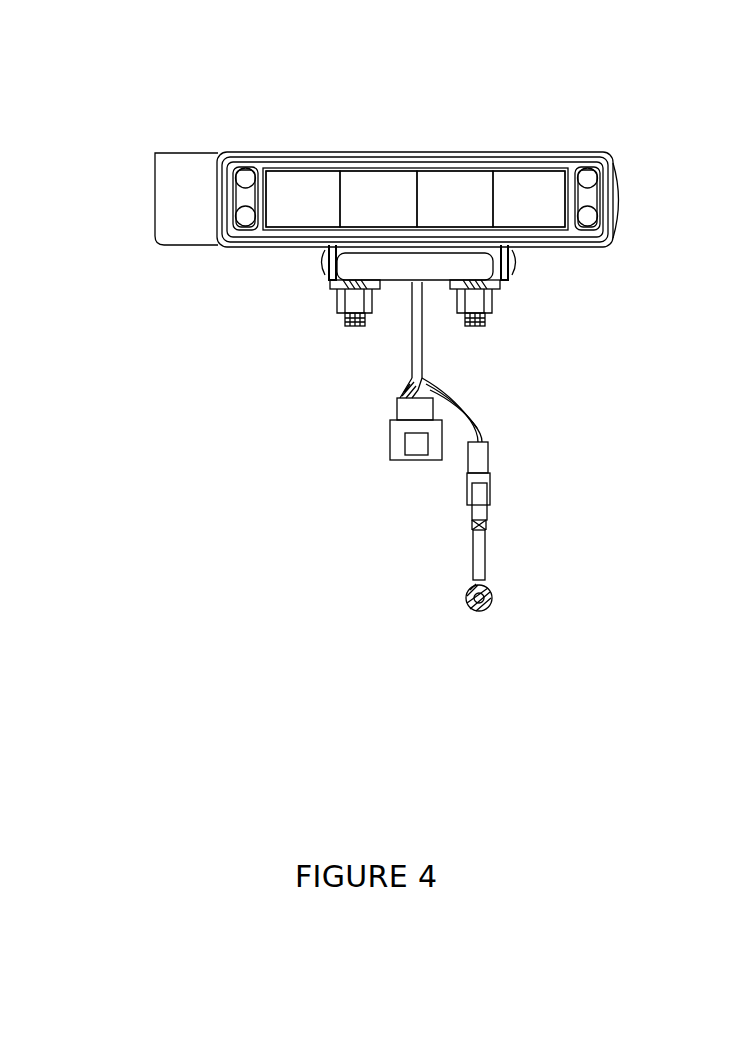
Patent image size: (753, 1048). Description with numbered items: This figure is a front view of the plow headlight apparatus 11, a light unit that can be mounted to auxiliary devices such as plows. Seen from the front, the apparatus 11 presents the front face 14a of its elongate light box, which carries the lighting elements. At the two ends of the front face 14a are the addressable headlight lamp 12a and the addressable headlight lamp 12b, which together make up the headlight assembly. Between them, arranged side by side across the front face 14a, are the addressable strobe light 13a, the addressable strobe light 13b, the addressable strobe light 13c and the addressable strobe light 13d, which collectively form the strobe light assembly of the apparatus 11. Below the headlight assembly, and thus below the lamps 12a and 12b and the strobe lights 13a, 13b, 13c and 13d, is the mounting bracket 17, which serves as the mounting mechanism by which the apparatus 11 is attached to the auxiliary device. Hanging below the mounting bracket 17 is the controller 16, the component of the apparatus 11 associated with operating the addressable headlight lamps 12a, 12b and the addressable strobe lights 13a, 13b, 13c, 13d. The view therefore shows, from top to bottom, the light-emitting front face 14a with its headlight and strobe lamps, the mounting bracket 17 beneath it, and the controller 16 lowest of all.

The plow headlight apparatus 11 is at (177, 133).
The addressable headlight lamp 12a is at (243, 218).
The addressable headlight lamp 12b is at (585, 180).
The addressable strobe light 13a is at (305, 192).
The addressable strobe light 13b is at (377, 192).
The addressable strobe light 13c is at (447, 192).
The addressable strobe light 13d is at (520, 192).
The front face 14a is at (298, 165).
The controller 16 is at (420, 413).
The mounting mechanism 17 is at (363, 267).